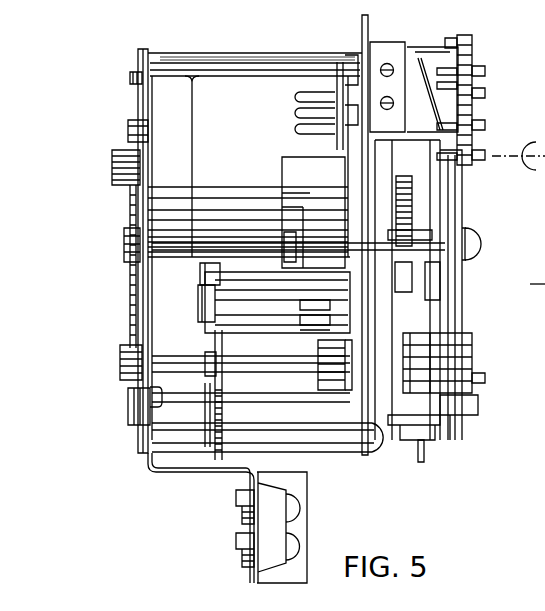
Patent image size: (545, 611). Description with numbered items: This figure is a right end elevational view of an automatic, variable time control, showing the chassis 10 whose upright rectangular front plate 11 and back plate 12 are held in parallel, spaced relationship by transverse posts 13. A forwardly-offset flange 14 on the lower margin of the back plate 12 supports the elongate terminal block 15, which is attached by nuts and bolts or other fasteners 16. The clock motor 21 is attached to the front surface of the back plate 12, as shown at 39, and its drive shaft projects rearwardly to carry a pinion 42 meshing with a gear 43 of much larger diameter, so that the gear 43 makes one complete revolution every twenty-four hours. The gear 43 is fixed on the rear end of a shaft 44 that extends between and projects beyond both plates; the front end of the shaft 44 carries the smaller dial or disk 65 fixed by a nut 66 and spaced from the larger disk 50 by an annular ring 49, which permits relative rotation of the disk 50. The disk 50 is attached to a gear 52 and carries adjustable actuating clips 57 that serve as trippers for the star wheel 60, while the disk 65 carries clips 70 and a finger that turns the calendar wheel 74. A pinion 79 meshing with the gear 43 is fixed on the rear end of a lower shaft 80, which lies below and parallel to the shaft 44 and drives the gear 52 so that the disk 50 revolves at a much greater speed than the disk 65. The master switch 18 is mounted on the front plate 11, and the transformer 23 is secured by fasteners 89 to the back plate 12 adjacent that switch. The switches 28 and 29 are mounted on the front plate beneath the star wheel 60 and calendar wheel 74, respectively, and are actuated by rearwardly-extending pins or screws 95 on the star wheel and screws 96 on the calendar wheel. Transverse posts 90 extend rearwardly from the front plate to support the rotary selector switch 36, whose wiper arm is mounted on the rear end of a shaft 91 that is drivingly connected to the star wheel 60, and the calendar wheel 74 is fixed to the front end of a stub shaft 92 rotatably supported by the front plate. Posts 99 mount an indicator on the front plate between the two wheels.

The chassis 10 is at (185, 53).
The front plate 11 is at (370, 20).
The back plate 12 is at (146, 388).
The transverse posts 13 is at (243, 53).
The forwardly-offset flange 14 is at (252, 478).
The terminal block 15 is at (308, 530).
The fasteners 16 is at (238, 550).
The master switch 18 is at (338, 68).
The clock motor 21 is at (236, 134).
The transformer 23 is at (320, 181).
The switch 28 is at (330, 300).
The switch 29 is at (394, 42).
The rotary selector switch 36 is at (200, 304).
The clock motor attachment 39 is at (130, 77).
The pinion 42 is at (116, 163).
The gear 43 is at (128, 306).
The shaft 44 is at (330, 240).
The annular element or ring 49 is at (438, 272).
The circular dial or disk 50 is at (415, 152).
The gear 52 is at (404, 175).
The actuating elements or clips 57 is at (416, 448).
The star wheel 60 is at (508, 359).
The circular dial or disk 65 is at (458, 216).
The nut 66 is at (483, 244).
The clips 70 is at (474, 418).
The calendar wheel 74 is at (474, 45).
The pinion 79 is at (122, 352).
The shaft 80 is at (178, 356).
The fasteners 89 is at (134, 131).
The transverse posts 90 is at (334, 452).
The shaft 91 is at (262, 385).
The stub shaft 92 is at (450, 99).
The pins or screws 95 is at (394, 418).
The pins or screws 96 is at (484, 68).
The posts 99 is at (390, 268).